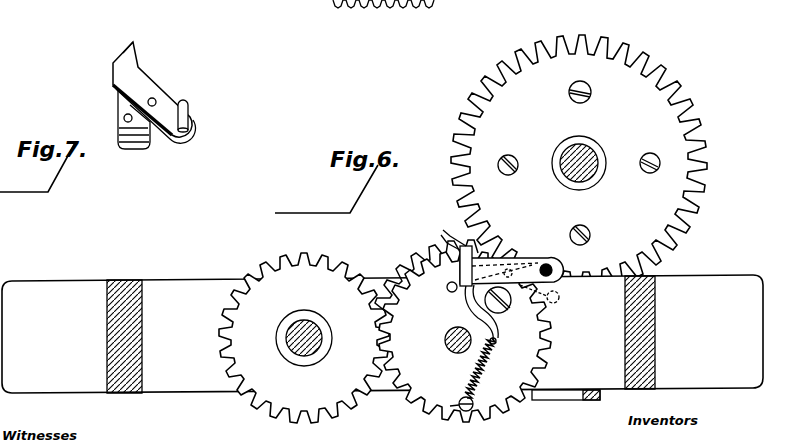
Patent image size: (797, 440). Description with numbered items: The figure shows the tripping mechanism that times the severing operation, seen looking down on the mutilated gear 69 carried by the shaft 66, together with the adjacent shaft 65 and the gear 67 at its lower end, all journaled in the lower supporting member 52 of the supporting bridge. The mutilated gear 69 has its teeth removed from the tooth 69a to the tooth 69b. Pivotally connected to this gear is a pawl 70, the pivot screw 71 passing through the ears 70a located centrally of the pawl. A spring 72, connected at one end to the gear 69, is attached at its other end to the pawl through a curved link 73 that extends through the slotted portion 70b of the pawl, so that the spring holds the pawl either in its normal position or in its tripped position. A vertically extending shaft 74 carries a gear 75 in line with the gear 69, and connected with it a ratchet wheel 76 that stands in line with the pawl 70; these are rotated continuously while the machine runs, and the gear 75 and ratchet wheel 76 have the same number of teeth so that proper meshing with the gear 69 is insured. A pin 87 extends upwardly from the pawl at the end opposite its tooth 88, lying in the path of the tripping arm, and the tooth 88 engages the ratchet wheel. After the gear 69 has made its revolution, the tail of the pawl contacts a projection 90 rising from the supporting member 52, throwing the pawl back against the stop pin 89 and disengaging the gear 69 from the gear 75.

In FIG. 6, the lower supporting member 52 is at (186, 383).
In FIG. 6, the shaft 65 is at (312, 320).
In FIG. 6, the shaft 66 is at (444, 340).
In FIG. 6, the gear 67 is at (308, 401).
In FIG. 6, the mutilated gear 69 is at (403, 393).
In FIG. 6, the tooth 69a is at (447, 224).
In FIG. 6, the tooth 69b is at (570, 297).
In FIG. 7, the pawl 70 is at (146, 88).
In FIG. 6, the pawl 70 is at (530, 260).
In FIG. 7, the ears 70a is at (128, 148).
In FIG. 7, the slotted portion 70b is at (116, 104).
In FIG. 6, the pivot screw 71 is at (497, 314).
In FIG. 6, the spring 72 is at (470, 377).
In FIG. 6, the curved link 73 is at (468, 305).
In FIG. 6, the vertically extending shaft 74 is at (594, 160).
In FIG. 6, the gear 75 is at (662, 70).
In FIG. 6, the ratchet wheel 76 is at (607, 60).
In FIG. 7, the pin 87 is at (190, 118).
In FIG. 6, the pin 87 is at (553, 268).
In FIG. 7, the tooth 88 is at (135, 43).
In FIG. 6, the tooth 88 is at (459, 251).
In FIG. 6, the stop pin 89 is at (447, 288).
In FIG. 6, the projection 90 is at (549, 401).